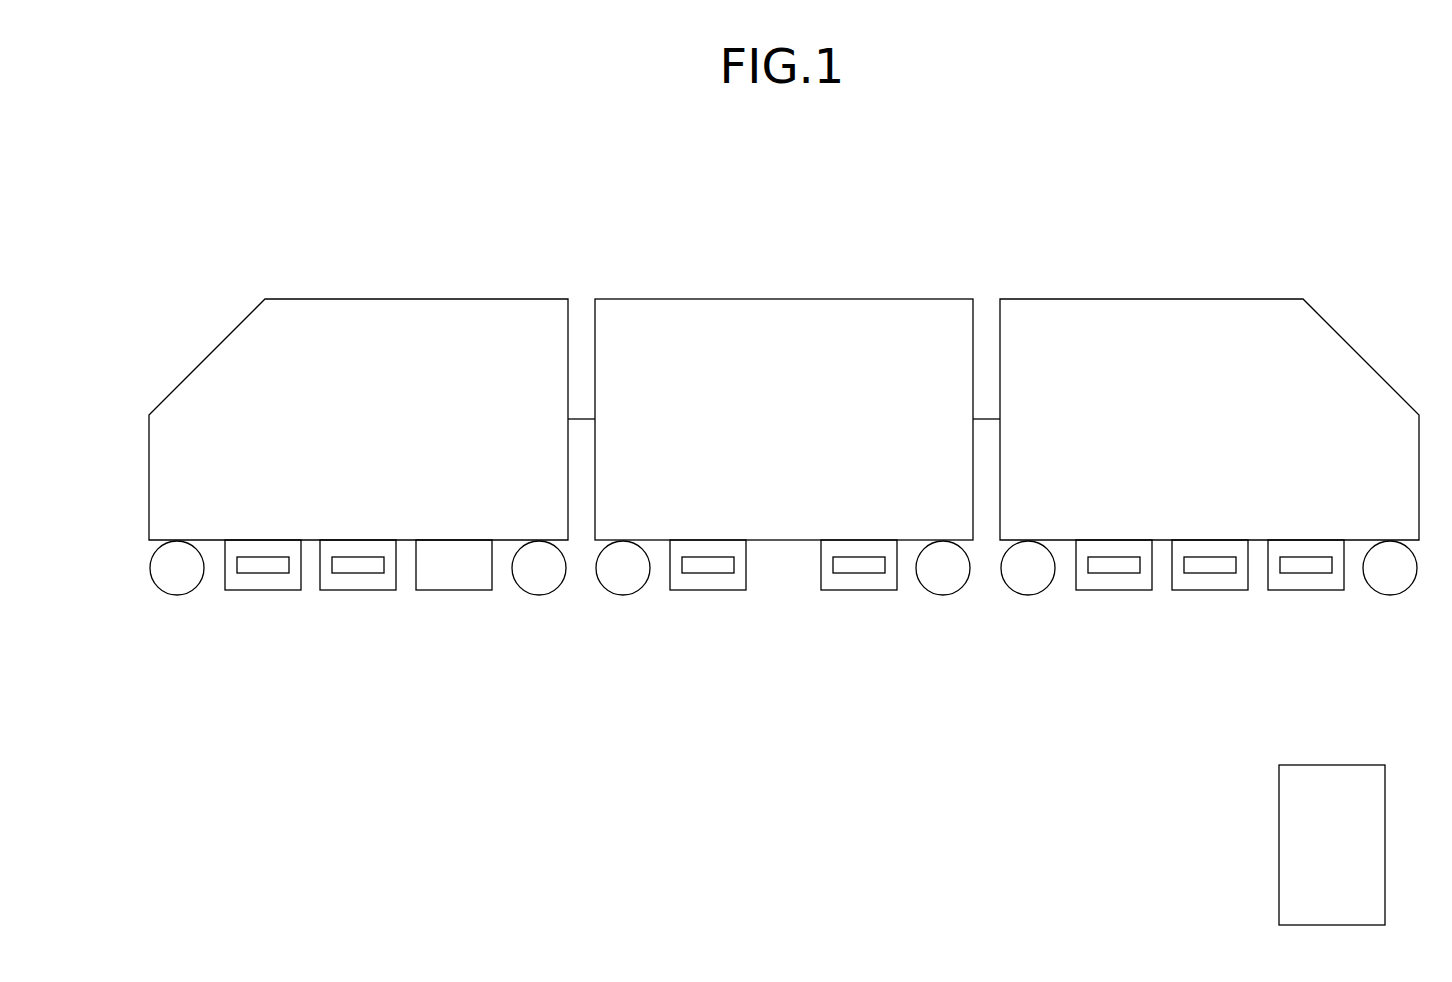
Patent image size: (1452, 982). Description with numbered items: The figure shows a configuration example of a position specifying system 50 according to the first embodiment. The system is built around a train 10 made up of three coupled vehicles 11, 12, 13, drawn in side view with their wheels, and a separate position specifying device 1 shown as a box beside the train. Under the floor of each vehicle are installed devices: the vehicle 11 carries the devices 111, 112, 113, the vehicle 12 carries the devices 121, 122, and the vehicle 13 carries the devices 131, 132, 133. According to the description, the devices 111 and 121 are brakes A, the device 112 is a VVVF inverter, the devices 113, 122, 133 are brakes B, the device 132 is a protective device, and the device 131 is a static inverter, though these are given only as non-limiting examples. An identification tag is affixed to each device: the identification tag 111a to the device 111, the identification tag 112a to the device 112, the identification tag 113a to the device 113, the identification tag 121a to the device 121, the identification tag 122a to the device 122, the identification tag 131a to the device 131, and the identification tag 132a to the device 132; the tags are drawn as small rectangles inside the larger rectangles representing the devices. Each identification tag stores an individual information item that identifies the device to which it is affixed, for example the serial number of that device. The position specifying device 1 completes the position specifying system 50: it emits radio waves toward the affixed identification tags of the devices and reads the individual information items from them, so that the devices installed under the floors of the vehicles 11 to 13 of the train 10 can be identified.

The position specifying device 1 is at (1279, 783).
The train 10 is at (1420, 260).
The vehicle 11 is at (1227, 299).
The vehicle 12 is at (897, 299).
The vehicle 13 is at (491, 299).
The position specifying system 50 is at (1312, 180).
The device 111 is at (1290, 591).
The identification tag 111a is at (1326, 574).
The device 112 is at (1194, 591).
The identification tag 112a is at (1230, 574).
The device 113 is at (1098, 591).
The identification tag 113a is at (1134, 574).
The device 121 is at (843, 591).
The identification tag 121a is at (879, 574).
The device 122 is at (692, 591).
The identification tag 122a is at (728, 574).
The device 131 is at (342, 591).
The identification tag 131a is at (378, 574).
The device 132 is at (247, 591).
The identification tag 132a is at (283, 574).
The device 133 is at (438, 591).